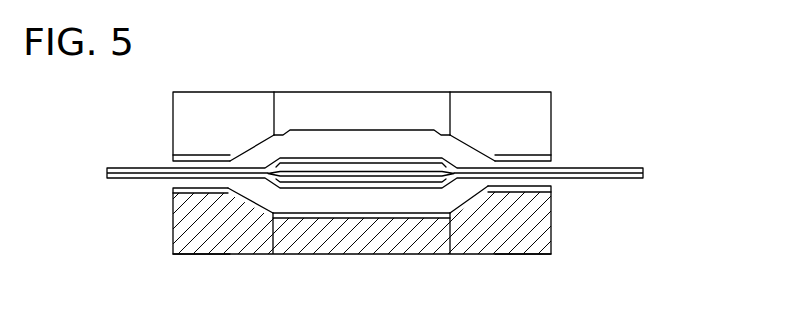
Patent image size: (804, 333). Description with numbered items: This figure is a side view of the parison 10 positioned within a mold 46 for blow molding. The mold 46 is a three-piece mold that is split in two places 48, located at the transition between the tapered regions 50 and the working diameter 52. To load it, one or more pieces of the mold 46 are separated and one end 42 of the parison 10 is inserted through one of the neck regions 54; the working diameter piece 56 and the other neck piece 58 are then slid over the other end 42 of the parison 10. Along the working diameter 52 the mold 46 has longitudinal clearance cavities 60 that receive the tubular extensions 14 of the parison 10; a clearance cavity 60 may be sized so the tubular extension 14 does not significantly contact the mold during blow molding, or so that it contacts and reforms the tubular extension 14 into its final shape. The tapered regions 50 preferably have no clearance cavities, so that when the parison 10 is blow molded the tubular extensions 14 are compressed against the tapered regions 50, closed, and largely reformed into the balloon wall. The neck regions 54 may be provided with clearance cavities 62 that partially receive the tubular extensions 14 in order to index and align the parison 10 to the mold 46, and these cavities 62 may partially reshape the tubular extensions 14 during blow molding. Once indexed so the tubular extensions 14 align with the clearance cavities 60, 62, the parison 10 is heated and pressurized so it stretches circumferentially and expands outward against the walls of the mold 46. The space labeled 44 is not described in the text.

The parison 10 is at (367, 181).
The tubular extension 14 is at (303, 158).
The end of the parison 42 is at (118, 168).
The cavity 44 is at (278, 214).
The mold 46 is at (553, 96).
The split place 48 is at (274, 92).
The tapered region 50 is at (249, 149).
The working diameter 52 is at (411, 130).
The neck region 54 is at (190, 161).
The working diameter piece 56 is at (371, 255).
The neck piece 58 is at (180, 255).
The working diameter clearance cavity 60 is at (343, 172).
The neck region clearance cavity 62 is at (208, 157).